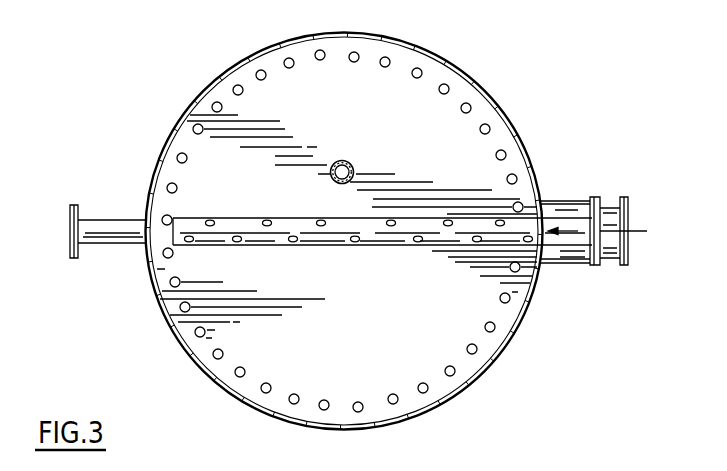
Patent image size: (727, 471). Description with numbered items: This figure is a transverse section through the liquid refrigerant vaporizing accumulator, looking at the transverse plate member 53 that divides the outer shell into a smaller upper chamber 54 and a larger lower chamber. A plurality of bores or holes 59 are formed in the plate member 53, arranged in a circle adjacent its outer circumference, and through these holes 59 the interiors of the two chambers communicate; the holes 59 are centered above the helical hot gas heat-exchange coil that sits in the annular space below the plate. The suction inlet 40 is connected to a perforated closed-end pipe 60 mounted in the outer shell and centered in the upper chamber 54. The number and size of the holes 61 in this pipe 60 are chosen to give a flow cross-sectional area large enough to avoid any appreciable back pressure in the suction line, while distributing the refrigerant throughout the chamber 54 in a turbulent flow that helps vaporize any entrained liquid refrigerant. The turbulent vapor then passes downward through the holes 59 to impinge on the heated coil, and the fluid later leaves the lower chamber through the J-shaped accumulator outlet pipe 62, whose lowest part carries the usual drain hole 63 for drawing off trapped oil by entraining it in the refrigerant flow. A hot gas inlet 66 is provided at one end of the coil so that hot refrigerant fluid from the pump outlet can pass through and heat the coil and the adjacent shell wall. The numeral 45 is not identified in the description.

The suction inlet 40 is at (612, 252).
The outlet pipe 45 is at (558, 178).
The transverse plate member 53 is at (485, 308).
The upper chamber 54 is at (416, 301).
The bores or holes 59 is at (488, 125).
The perforated closed-end pipe 60 is at (303, 245).
The holes 61 is at (272, 223).
The J-shaped accumulator outlet pipe 62 is at (352, 164).
The drain hole 63 is at (439, 4).
The hot gas inlet 66 is at (70, 228).